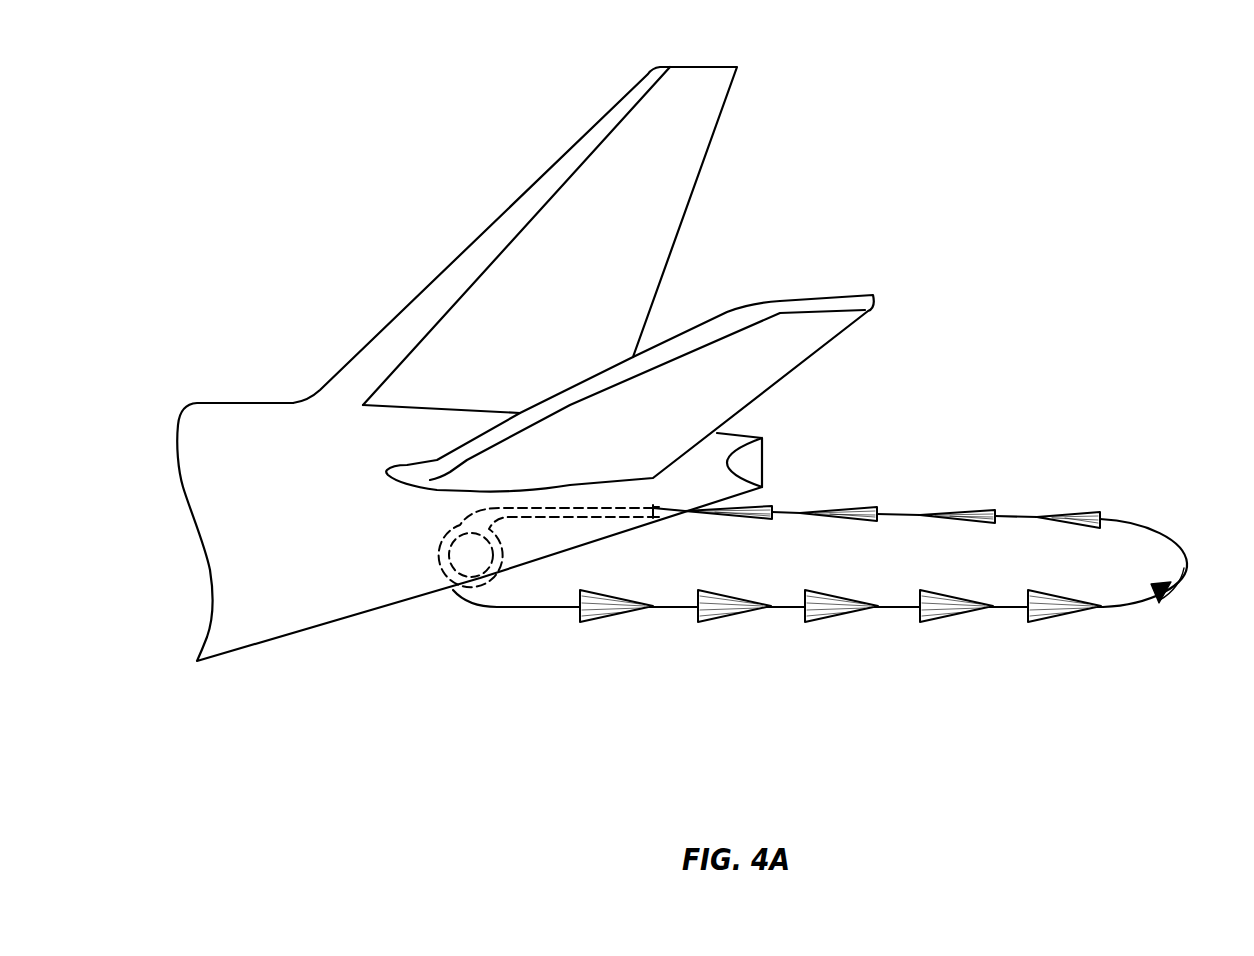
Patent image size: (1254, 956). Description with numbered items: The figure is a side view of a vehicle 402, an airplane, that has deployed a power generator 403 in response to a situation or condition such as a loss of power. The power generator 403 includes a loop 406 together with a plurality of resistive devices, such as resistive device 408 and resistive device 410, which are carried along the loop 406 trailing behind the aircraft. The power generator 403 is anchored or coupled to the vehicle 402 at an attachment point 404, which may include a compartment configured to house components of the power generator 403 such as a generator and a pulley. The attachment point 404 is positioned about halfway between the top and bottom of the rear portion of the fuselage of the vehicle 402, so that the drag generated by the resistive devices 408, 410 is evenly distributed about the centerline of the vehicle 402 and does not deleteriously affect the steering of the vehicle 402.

The vehicle 402 is at (677, 46).
The power generator 403 is at (755, 748).
The attachment point 404 is at (450, 605).
The loop 406 is at (1153, 508).
The resistive device 408 is at (943, 632).
The resistive device 410 is at (965, 497).